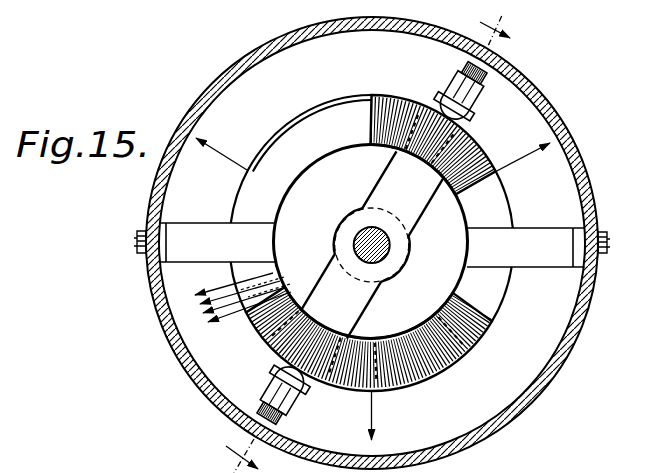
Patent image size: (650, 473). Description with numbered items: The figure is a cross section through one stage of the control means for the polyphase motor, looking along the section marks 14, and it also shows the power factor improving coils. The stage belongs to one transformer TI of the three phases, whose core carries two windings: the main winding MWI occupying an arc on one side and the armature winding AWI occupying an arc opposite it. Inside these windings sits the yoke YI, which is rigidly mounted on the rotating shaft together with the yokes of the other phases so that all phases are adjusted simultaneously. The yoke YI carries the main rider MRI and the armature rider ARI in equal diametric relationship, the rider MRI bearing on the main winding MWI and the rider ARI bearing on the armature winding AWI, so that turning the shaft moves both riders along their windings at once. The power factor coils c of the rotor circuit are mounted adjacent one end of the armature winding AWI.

The yoke YI is at (374, 189).
The main winding MWI is at (443, 184).
The armature winding AWI is at (376, 336).
The transformer TI is at (505, 277).
The main rider MRI is at (484, 90).
The armature rider ARI is at (277, 397).
The power factor coils c is at (243, 289).
The section line of Fig. 14 is at (368, 244).